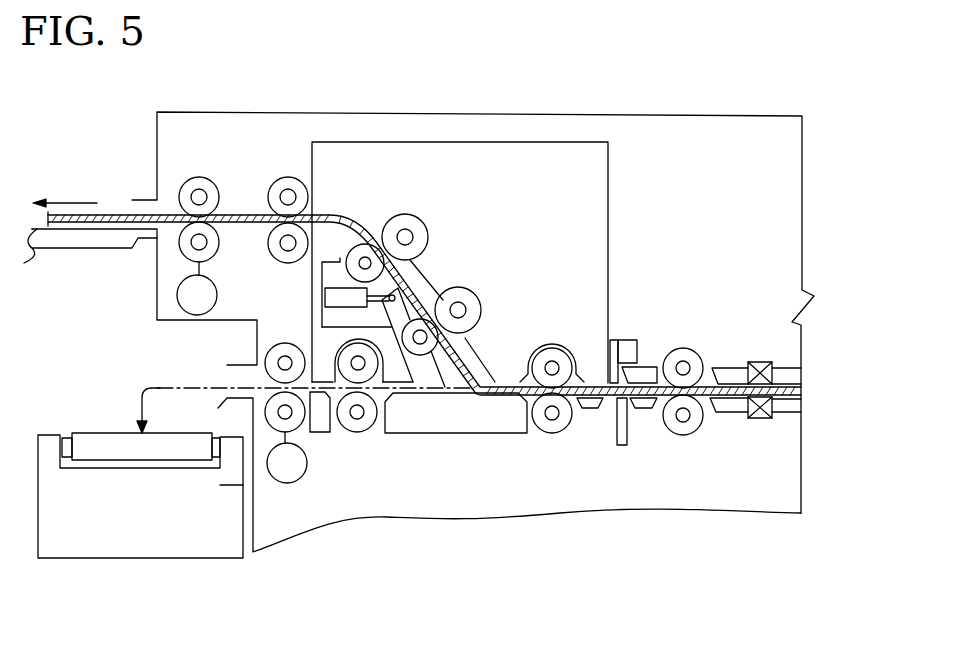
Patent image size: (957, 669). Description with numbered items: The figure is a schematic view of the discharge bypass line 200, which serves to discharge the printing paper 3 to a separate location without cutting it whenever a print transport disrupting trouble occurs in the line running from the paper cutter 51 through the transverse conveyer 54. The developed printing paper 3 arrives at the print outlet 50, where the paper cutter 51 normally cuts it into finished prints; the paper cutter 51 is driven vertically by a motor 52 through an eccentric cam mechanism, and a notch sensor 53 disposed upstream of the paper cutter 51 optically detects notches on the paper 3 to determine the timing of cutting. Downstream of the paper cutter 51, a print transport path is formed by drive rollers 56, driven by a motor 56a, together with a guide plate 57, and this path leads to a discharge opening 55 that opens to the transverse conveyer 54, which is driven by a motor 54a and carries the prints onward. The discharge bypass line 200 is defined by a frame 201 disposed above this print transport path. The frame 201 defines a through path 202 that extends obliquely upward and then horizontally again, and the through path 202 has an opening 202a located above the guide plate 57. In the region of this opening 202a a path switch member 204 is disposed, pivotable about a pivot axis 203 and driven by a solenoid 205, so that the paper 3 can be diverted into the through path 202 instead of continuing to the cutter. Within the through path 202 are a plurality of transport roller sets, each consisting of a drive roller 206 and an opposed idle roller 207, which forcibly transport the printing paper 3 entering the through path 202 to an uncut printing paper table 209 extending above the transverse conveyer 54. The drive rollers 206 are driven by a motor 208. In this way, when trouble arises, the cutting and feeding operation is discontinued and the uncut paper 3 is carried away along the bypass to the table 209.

The discharge bypass line 200 is at (328, 208).
The frame 201 is at (604, 187).
The through path 202 is at (467, 360).
The opening 202a is at (127, 210).
The pivot axis 203 is at (428, 290).
The path switch member 204 is at (447, 378).
The solenoid 205 is at (333, 297).
The drive roller 206 is at (185, 252).
The idle roller 207 is at (275, 188).
The motor 208 is at (188, 298).
The uncut printing paper table 209 is at (70, 250).
The print outlet 50 is at (417, 310).
The discharge opening 55 is at (228, 379).
The drive rollers 56 is at (297, 427).
The motor 56a is at (288, 483).
The guide plate 57 is at (477, 430).
The transverse conveyer 54 is at (125, 437).
The motor 54a is at (230, 473).
The paper cutter 51 is at (615, 357).
The motor 52 is at (633, 342).
The notch sensor 53 is at (748, 407).
The printing paper 3 is at (734, 397).